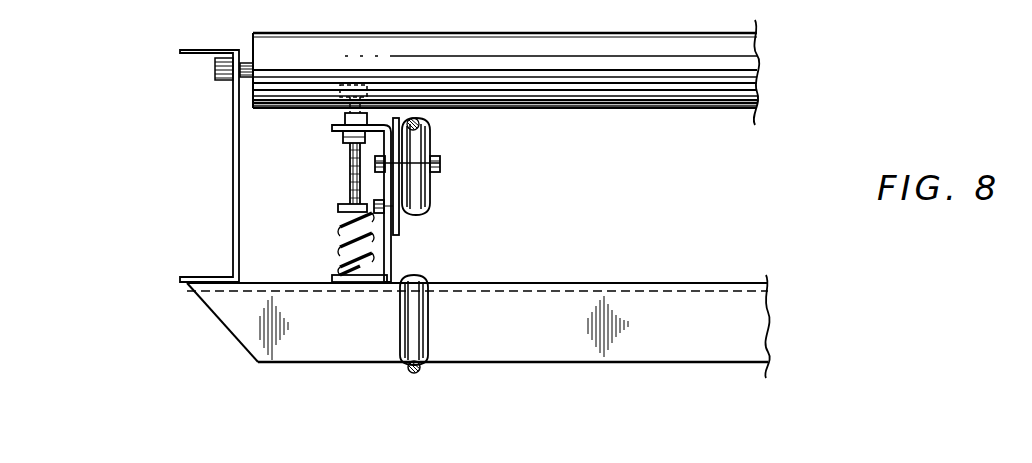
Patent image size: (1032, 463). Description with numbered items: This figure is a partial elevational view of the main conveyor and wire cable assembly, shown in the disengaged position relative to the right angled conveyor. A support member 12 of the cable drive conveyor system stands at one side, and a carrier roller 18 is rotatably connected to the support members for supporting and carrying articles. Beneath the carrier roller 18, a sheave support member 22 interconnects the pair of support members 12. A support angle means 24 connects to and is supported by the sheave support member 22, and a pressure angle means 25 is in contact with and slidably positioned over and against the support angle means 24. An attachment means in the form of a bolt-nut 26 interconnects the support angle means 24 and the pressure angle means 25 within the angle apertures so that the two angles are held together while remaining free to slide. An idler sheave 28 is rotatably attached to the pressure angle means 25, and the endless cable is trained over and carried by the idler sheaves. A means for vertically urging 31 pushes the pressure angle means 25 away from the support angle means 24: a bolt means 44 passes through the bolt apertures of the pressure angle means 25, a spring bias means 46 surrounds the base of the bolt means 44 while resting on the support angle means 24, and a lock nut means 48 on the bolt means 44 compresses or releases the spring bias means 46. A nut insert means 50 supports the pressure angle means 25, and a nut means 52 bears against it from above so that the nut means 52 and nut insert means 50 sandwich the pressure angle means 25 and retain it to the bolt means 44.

The support member 12 is at (233, 170).
The carrier roller 18 is at (303, 56).
The sheave support member 22 is at (307, 308).
The support angle means 24 is at (388, 281).
The pressure angle means 25 is at (432, 116).
The bolt-nut 26 is at (405, 236).
The idler sheave 28 is at (436, 168).
The means for vertically urging 31 is at (333, 218).
The bolt means 44 is at (352, 162).
The spring bias means 46 is at (340, 248).
The lock nut means 48 is at (347, 203).
The nut insert means 50 is at (344, 138).
The nut means 52 is at (376, 124).